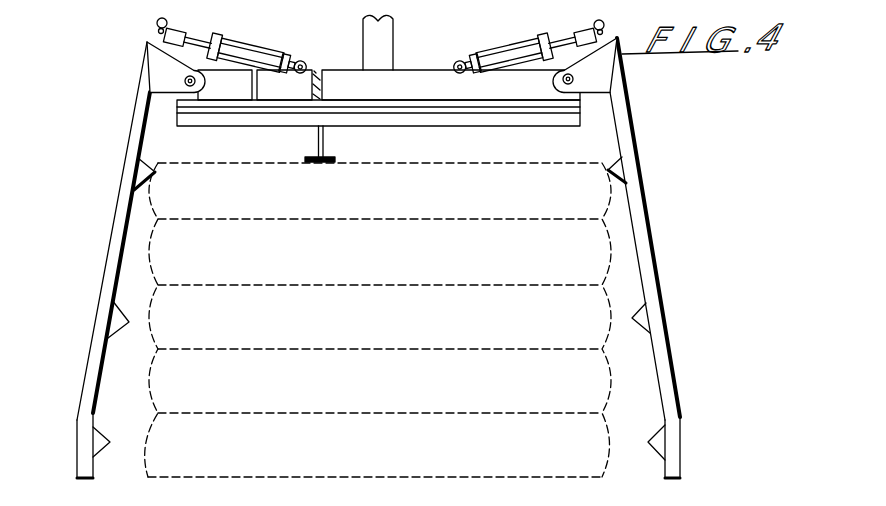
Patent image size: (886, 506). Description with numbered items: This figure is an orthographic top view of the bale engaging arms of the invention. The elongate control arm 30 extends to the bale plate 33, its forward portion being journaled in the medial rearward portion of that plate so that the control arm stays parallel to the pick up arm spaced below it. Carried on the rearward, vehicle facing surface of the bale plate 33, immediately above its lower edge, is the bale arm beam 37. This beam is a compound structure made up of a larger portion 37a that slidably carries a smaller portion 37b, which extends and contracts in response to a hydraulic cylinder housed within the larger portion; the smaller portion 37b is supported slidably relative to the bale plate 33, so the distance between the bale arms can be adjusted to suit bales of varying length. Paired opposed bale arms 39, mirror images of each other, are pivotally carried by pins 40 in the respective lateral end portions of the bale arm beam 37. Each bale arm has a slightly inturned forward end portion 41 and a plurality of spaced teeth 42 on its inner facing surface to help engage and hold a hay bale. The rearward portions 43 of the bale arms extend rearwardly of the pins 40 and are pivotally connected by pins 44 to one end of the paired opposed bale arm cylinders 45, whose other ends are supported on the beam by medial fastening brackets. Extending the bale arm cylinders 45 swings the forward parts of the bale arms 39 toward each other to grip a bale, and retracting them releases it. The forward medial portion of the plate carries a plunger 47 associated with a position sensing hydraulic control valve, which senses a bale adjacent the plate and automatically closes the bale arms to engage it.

The control arm 30 is at (393, 53).
The bale plate 33 is at (478, 116).
The bale arm beam 37 is at (227, 103).
The larger portion 37a is at (490, 89).
The smaller portion 37b is at (322, 82).
The bale arm 39 is at (123, 208).
The pin 40 is at (188, 79).
The forward end portion 41 is at (85, 470).
The teeth 42 is at (103, 428).
The rearward portion 43 is at (150, 56).
The pin 44 is at (157, 25).
The bale arm cylinder 45 is at (228, 47).
The plunger 47 is at (330, 164).